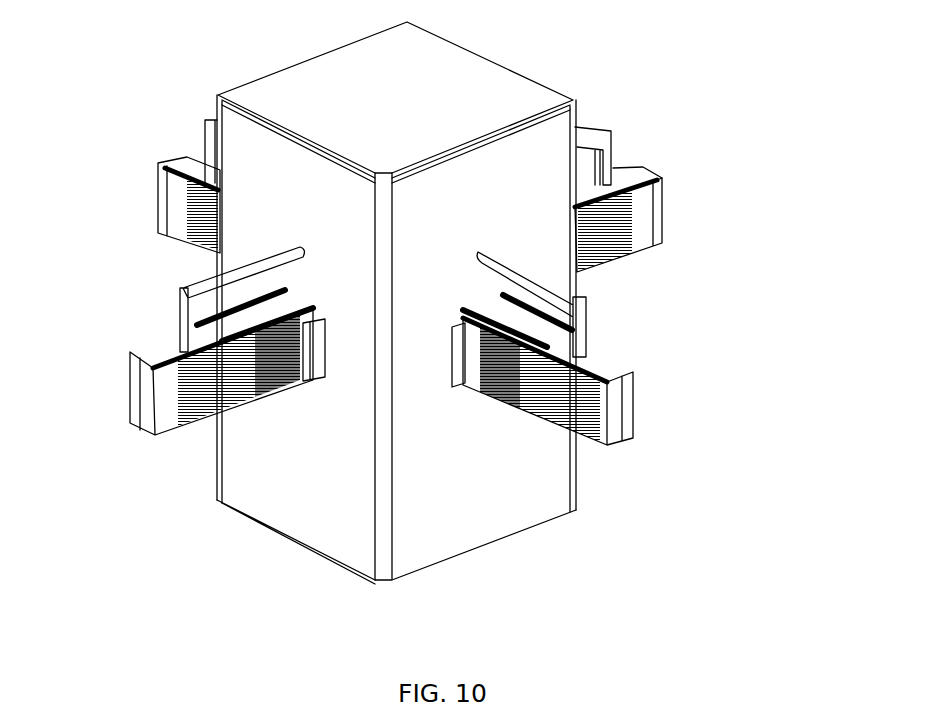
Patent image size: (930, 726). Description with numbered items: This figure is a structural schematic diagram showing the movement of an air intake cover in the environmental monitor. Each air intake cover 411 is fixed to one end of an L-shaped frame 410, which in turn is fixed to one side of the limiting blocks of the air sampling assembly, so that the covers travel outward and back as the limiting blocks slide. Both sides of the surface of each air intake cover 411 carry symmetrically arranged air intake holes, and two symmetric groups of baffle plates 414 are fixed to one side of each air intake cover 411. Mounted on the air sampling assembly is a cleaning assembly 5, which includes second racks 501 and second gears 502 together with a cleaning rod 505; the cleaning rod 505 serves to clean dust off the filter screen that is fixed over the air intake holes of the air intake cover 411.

The cleaning assembly 5 is at (176, 378).
The L-shaped frame 410 is at (580, 298).
The air intake cover 411 is at (170, 393).
The baffle plate 414 is at (663, 243).
The second rack 501 is at (200, 345).
The second gear 502 is at (200, 287).
The cleaning rod 505 is at (303, 383).